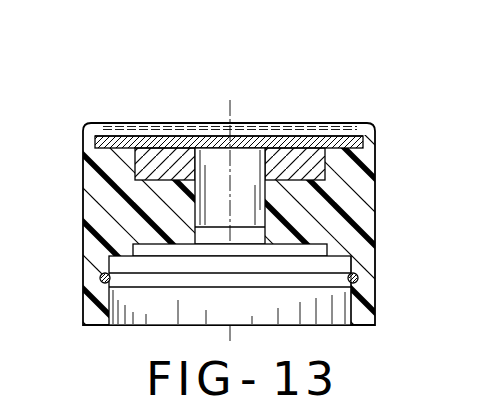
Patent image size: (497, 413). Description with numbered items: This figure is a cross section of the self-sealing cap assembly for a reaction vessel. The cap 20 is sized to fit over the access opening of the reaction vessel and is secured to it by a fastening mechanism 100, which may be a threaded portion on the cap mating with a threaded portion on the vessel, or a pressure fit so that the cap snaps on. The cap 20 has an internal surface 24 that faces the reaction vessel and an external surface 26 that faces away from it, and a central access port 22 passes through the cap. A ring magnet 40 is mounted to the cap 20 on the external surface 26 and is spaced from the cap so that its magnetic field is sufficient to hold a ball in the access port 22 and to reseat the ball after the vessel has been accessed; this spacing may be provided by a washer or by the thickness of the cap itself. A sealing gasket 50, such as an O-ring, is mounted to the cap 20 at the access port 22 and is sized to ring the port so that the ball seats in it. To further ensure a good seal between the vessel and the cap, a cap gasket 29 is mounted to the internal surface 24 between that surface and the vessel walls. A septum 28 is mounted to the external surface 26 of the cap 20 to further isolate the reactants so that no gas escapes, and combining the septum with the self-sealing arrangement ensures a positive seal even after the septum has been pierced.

The cap 20 is at (86, 122).
The access port 22 is at (238, 204).
The internal surface 24 is at (140, 250).
The external surface 26 is at (126, 142).
The septum 28 is at (177, 139).
The cap gasket 29 is at (102, 275).
The ring magnet 40 is at (288, 160).
The sealing gasket 50 is at (290, 221).
The fastening mechanism 100 is at (221, 205).